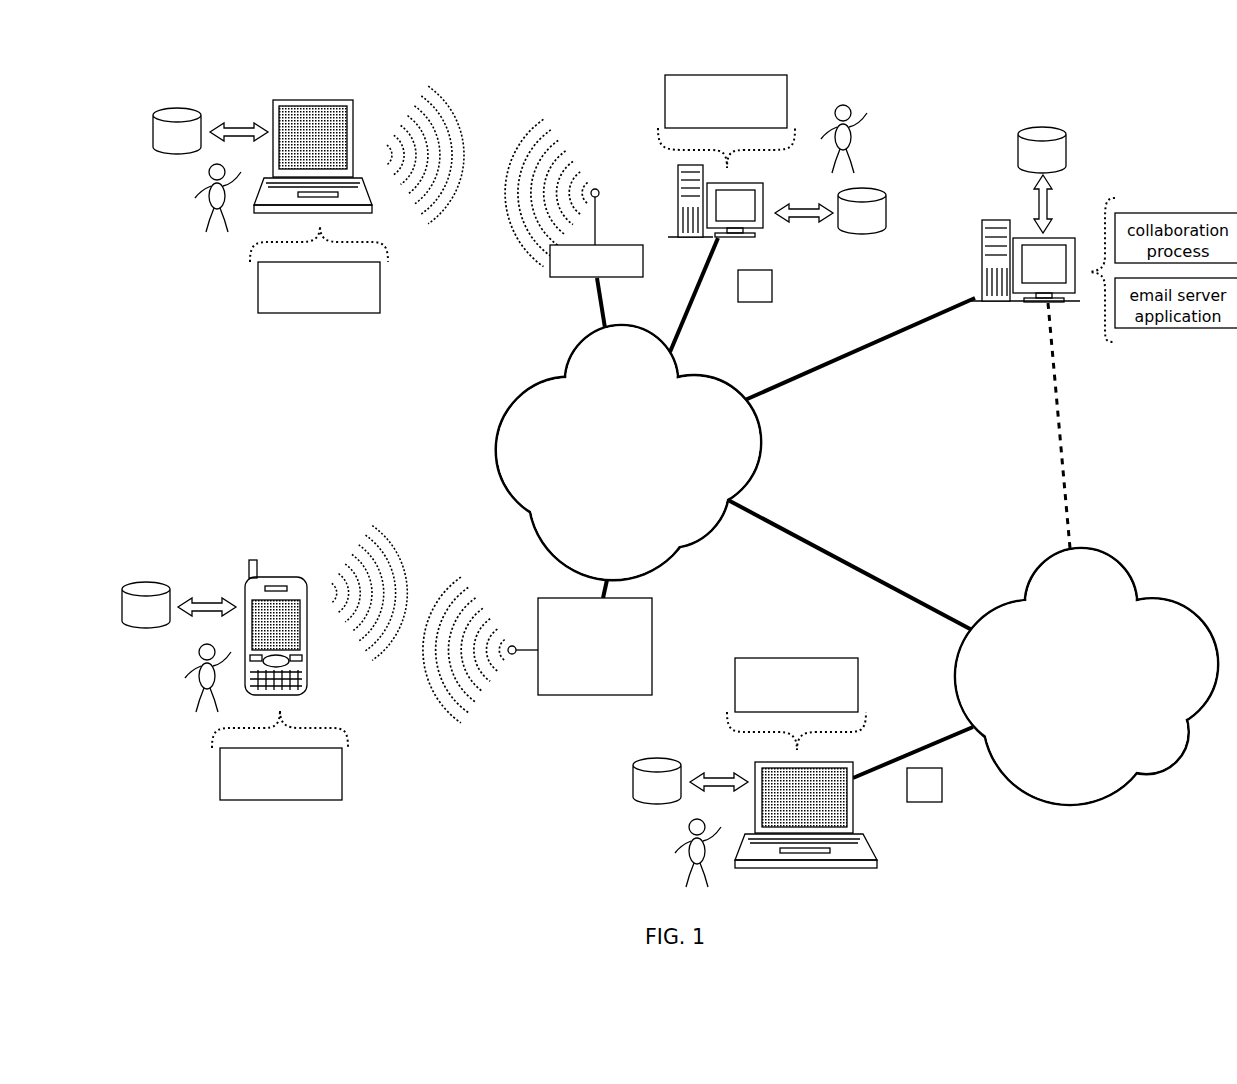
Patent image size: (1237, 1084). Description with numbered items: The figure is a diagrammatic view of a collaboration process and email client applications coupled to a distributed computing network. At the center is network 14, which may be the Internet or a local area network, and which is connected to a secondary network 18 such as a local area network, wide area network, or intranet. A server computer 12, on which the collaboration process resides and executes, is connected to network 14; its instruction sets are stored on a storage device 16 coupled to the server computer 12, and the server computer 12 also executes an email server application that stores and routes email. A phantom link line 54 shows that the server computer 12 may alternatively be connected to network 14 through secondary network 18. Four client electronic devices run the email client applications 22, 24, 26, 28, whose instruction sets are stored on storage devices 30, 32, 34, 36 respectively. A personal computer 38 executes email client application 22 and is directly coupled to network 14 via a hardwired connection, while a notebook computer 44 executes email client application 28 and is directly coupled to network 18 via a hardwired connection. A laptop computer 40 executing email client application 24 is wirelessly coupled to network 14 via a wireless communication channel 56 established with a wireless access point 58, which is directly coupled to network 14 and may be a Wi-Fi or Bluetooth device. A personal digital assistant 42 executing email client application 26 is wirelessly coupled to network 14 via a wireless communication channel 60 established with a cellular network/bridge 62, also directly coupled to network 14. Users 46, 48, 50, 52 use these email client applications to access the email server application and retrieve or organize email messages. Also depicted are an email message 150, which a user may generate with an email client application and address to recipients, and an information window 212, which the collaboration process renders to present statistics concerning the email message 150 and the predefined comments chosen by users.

The server computer 12 is at (978, 243).
The network 14 is at (628, 452).
The storage device 16 is at (1042, 150).
The secondary network 18 is at (1086, 676).
The email client application 22 is at (787, 105).
The email client application 24 is at (380, 287).
The email client application 26 is at (342, 772).
The email client application 28 is at (858, 685).
The storage device 30 is at (862, 211).
The storage device 32 is at (177, 131).
The storage device 34 is at (146, 605).
The storage device 36 is at (657, 781).
The personal computer 38 is at (763, 195).
The laptop computer 40 is at (353, 123).
The personal digital assistant 42 is at (308, 632).
The notebook computer 44 is at (853, 808).
The user 46 is at (862, 120).
The user 48 is at (180, 188).
The user 50 is at (178, 660).
The user 52 is at (660, 848).
The phantom link line 54 is at (1050, 418).
The wireless communication channel 56 is at (497, 143).
The wireless access point 58 is at (550, 260).
The wireless communication channel 60 is at (428, 600).
The cellular network/bridge 62 is at (652, 612).
The email message 150 is at (772, 288).
The information window 212 is at (942, 785).